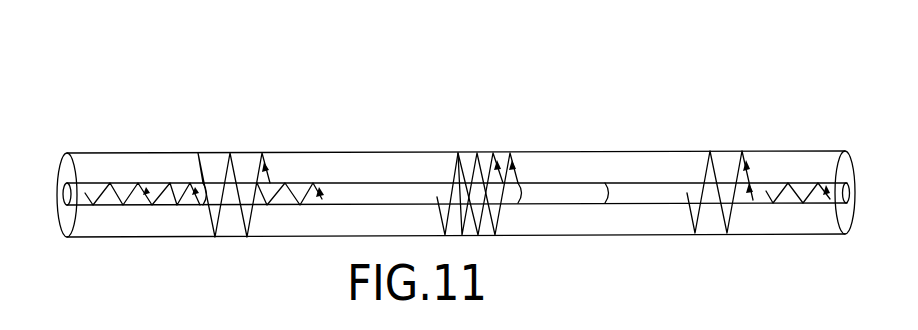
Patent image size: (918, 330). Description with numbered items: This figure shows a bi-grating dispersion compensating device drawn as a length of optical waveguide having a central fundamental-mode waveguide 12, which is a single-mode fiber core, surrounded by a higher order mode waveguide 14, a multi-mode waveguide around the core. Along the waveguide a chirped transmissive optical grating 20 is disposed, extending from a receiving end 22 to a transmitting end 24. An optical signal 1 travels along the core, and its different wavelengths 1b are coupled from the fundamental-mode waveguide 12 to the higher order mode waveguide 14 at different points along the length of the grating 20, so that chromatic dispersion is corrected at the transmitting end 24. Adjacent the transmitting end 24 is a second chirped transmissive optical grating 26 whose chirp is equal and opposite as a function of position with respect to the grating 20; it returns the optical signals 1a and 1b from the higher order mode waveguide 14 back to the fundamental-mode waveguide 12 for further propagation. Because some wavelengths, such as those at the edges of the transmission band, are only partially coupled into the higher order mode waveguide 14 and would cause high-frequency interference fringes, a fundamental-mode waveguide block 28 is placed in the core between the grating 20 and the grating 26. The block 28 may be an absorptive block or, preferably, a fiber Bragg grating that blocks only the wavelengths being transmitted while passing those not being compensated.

The optical signal 1 is at (110, 183).
The optical signal wavelength 1a is at (232, 154).
The different wavelengths of optical signal 1b is at (293, 184).
The fundamental-mode waveguide 12 is at (404, 192).
The higher order mode waveguide 14 is at (357, 174).
The chirped transmissive optical grating 20 is at (456, 133).
The receiving end 22 is at (203, 184).
The transmitting end 24 is at (520, 186).
The second chirped transmissive optical grating 26 is at (726, 150).
The fundamental-mode waveguide block 28 is at (606, 190).